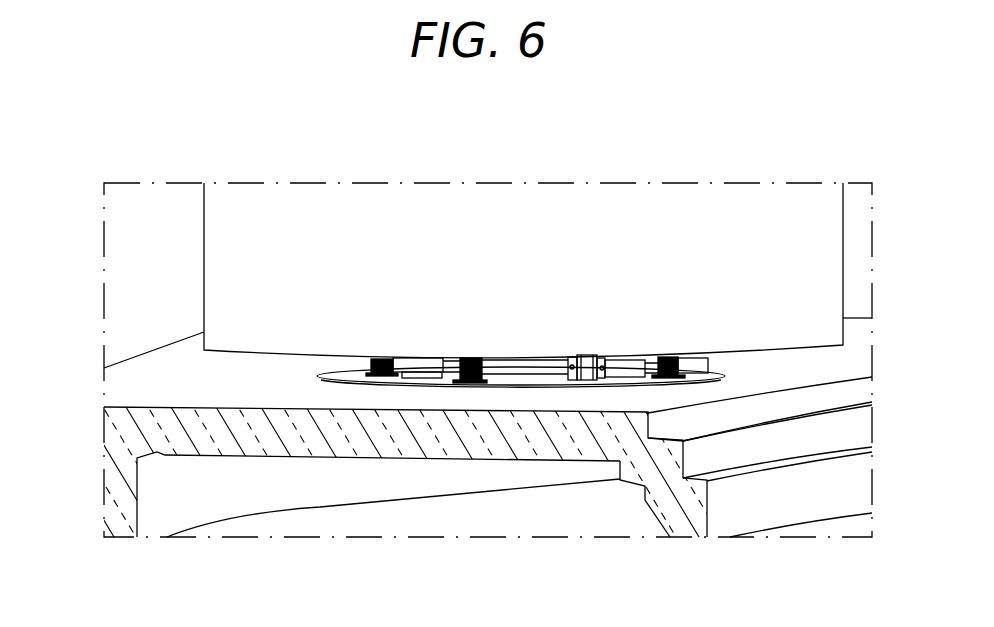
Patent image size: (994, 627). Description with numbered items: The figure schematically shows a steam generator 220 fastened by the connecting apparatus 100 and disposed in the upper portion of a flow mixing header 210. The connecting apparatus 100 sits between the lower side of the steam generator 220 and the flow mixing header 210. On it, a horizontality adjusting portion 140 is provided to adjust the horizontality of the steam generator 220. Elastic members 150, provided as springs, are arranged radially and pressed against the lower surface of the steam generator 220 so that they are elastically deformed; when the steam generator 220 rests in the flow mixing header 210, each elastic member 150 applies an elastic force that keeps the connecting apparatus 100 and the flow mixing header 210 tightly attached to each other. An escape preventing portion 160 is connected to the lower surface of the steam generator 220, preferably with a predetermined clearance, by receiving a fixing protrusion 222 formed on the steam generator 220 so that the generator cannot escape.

The connecting apparatus 100 is at (512, 400).
The horizontality adjusting portion 140 is at (690, 340).
The elastic member 150 is at (381, 358).
The escape preventing portion 160 is at (560, 346).
The flow mixing header 210 is at (245, 385).
The steam generator 220 is at (333, 205).
The fixing protrusion 222 is at (591, 353).